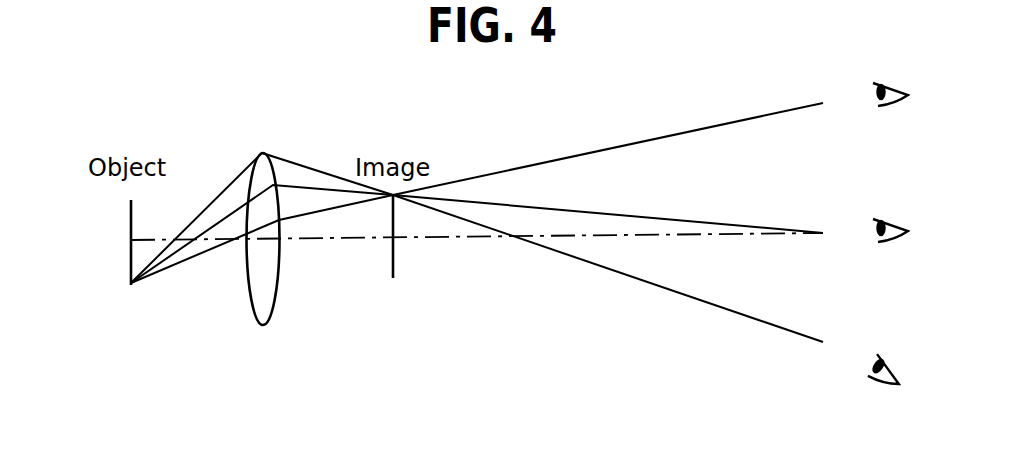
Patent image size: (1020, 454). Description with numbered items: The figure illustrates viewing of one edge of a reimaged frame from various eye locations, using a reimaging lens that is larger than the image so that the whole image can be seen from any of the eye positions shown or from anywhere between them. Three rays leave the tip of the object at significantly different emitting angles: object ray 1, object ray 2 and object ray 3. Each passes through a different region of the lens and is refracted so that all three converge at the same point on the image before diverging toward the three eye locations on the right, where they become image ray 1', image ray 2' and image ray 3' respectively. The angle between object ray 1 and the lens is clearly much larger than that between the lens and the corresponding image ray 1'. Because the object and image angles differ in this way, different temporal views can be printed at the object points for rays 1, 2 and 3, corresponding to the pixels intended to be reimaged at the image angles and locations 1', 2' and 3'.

The object ray 1 is at (220, 264).
The object ray 2 is at (220, 261).
The object ray 3 is at (220, 259).
The image ray and eye location 1' is at (650, 221).
The image ray and eye location 2' is at (649, 294).
The image ray and eye location 3' is at (650, 139).